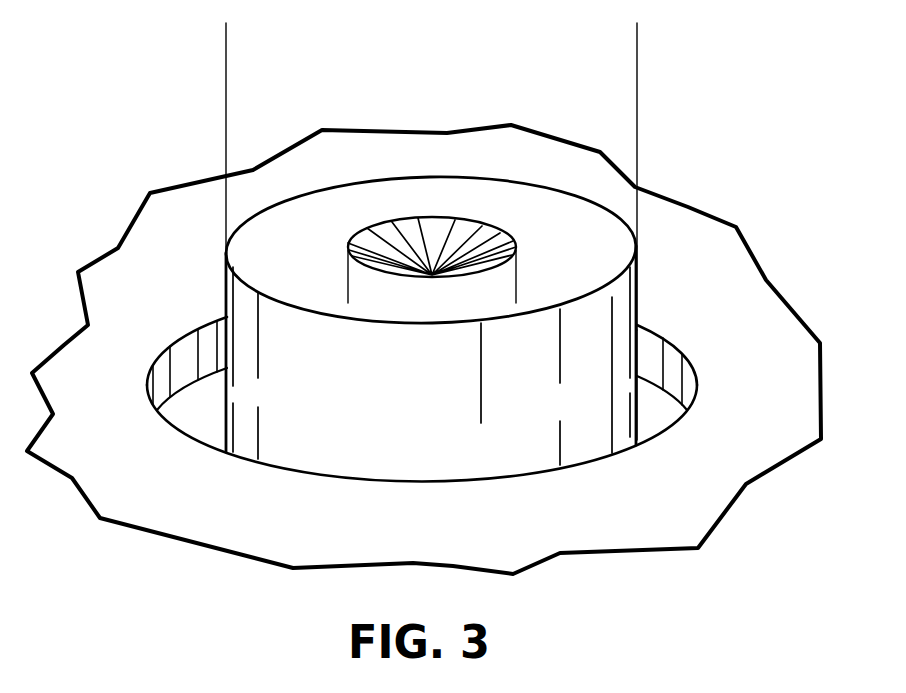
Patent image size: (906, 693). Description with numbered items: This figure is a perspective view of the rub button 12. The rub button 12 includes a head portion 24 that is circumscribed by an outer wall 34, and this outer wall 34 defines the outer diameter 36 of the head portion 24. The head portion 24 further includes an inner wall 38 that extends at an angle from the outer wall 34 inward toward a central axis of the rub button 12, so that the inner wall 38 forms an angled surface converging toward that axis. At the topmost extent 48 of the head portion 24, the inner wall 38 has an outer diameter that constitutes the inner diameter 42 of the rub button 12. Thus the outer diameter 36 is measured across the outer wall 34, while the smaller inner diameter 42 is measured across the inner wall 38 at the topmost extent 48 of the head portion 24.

The rub button 12 is at (447, 197).
The head portion 24 is at (200, 295).
The outer wall 34 is at (640, 305).
The outer diameter 36 is at (623, 33).
The inner wall 38 is at (408, 233).
The inner diameter 42 is at (362, 294).
The topmost extent 48 is at (550, 240).